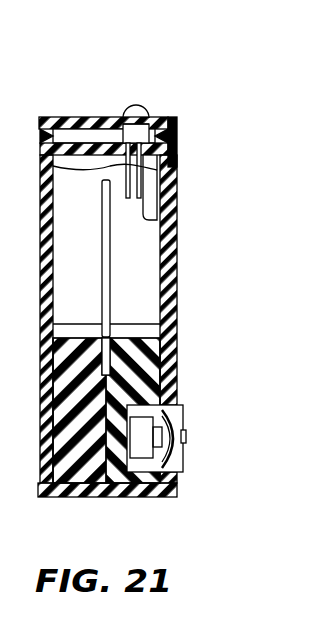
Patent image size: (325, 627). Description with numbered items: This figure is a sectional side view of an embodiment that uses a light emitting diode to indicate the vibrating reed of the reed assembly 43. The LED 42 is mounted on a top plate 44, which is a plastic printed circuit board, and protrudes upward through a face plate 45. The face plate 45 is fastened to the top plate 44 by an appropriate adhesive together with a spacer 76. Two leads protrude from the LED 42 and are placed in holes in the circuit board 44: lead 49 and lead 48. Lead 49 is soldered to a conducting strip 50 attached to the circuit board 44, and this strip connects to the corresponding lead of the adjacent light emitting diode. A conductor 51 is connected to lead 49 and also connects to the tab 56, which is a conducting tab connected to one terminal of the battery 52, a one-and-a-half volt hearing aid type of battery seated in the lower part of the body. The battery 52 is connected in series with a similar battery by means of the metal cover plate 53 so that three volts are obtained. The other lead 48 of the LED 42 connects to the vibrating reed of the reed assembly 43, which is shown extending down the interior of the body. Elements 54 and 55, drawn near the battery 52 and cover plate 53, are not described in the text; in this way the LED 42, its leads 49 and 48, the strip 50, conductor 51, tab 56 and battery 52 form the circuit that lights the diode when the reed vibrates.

The LED 42 is at (139, 105).
The face plate 45 is at (178, 121).
The spacer 76 is at (178, 134).
The top plate 44 is at (178, 150).
The conducting strip 50 is at (141, 160).
The lead 49 is at (157, 212).
The conductor 51 is at (177, 256).
The lead 48 is at (53, 166).
The reed assembly 43 is at (102, 212).
The tab 56 is at (128, 440).
The metal cover plate 53 is at (183, 410).
The battery 52 is at (147, 450).
The lens 54 is at (180, 468).
The window stub 55 is at (186, 436).